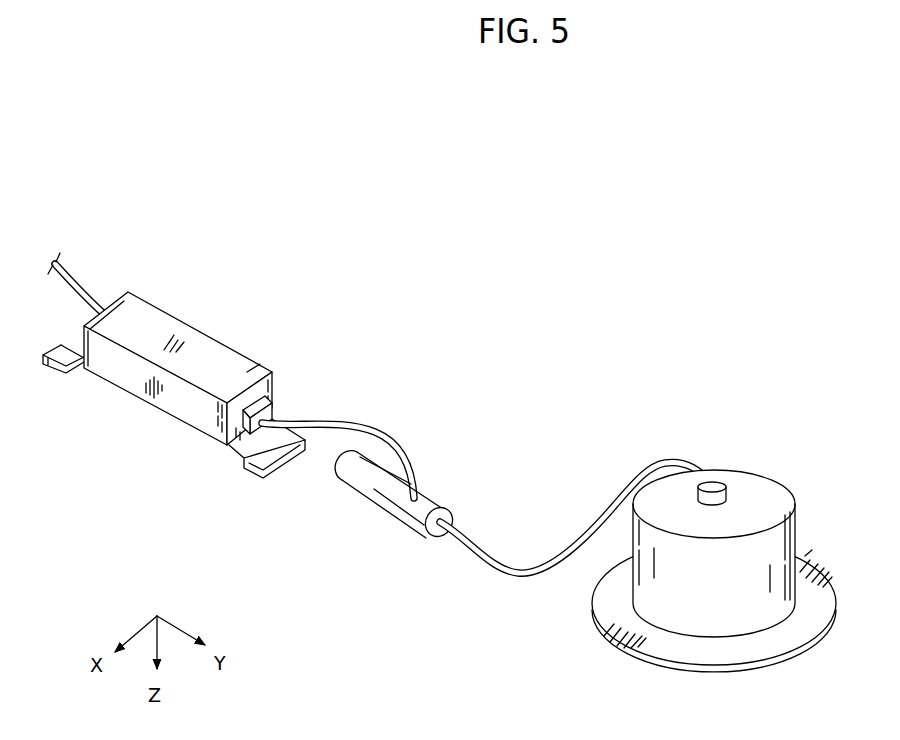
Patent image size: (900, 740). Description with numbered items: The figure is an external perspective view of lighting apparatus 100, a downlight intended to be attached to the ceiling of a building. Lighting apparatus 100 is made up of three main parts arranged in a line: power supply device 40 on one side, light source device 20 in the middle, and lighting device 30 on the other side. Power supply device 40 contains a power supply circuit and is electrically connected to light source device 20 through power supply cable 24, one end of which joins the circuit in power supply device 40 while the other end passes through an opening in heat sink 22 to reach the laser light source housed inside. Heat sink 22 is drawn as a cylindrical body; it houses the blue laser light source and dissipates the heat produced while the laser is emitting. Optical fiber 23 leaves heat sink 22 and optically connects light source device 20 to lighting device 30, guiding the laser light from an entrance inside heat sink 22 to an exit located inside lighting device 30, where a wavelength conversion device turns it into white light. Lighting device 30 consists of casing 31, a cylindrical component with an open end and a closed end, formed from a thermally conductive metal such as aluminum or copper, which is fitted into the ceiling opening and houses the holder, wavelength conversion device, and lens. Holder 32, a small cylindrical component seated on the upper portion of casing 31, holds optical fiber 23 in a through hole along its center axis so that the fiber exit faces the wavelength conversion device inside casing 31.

The lighting apparatus 100 is at (757, 266).
The power supply device 40 is at (295, 301).
The light source device 20 is at (459, 466).
The heat sink 22 is at (380, 498).
The optical fiber 23 is at (603, 510).
The power supply cable 24 is at (375, 421).
The lighting device 30 is at (809, 480).
The casing 31 is at (784, 527).
The holder 32 is at (728, 497).